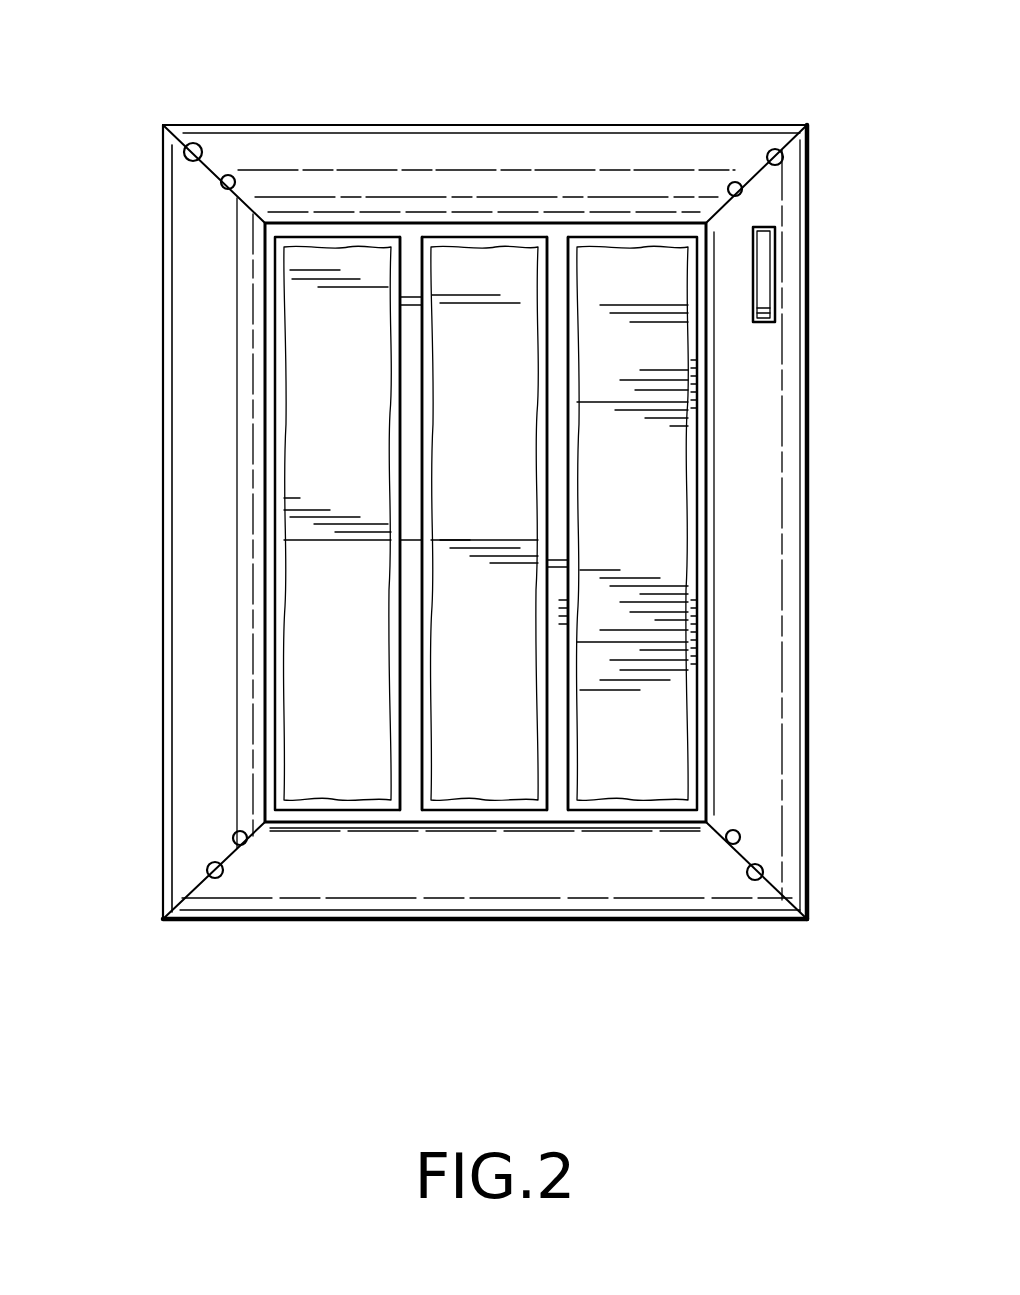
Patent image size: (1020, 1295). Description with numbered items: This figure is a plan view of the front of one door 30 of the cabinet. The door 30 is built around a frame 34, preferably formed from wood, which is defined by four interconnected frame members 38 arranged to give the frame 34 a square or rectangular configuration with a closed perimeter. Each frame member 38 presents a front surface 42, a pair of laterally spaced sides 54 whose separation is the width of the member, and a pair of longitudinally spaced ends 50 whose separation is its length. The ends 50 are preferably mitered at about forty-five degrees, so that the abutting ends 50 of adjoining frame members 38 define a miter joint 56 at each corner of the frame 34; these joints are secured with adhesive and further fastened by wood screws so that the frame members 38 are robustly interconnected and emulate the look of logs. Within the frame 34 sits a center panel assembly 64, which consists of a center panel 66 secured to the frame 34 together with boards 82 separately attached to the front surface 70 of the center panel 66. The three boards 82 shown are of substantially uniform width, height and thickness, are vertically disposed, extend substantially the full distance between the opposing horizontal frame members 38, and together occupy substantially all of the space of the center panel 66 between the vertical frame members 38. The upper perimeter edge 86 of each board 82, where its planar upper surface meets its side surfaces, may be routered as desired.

The door 30 is at (808, 788).
The frame 34 is at (678, 125).
The frame member 38 is at (255, 125).
The front surface 42 is at (407, 153).
The end 50 is at (203, 146).
The side 54 is at (163, 370).
The miter joint 56 is at (200, 158).
The center panel assembly 64 is at (664, 546).
The center panel 66 is at (408, 805).
The front surface 70 is at (558, 253).
The board 82 is at (321, 434).
The upper perimeter edge 86 is at (470, 246).